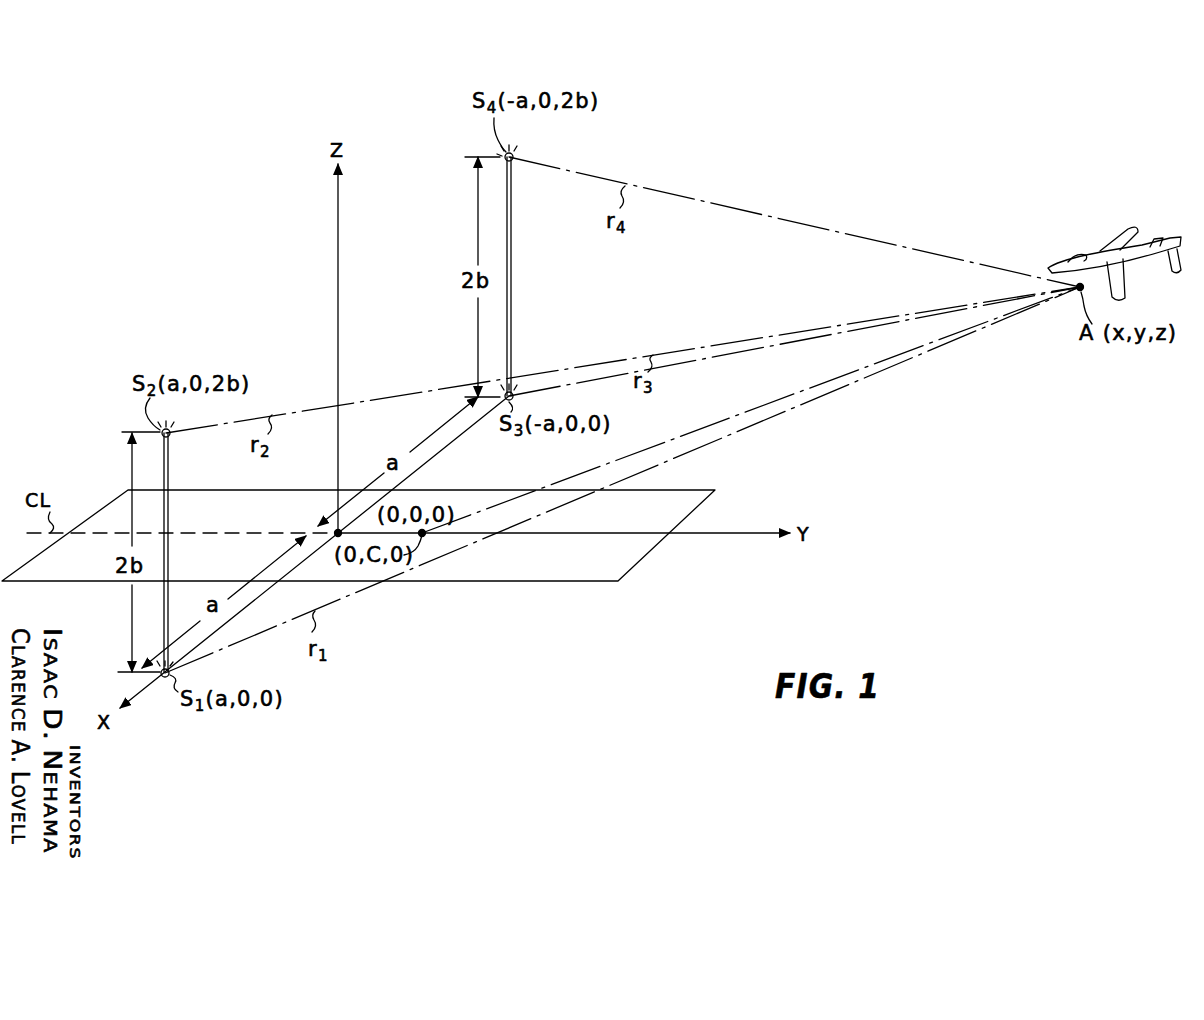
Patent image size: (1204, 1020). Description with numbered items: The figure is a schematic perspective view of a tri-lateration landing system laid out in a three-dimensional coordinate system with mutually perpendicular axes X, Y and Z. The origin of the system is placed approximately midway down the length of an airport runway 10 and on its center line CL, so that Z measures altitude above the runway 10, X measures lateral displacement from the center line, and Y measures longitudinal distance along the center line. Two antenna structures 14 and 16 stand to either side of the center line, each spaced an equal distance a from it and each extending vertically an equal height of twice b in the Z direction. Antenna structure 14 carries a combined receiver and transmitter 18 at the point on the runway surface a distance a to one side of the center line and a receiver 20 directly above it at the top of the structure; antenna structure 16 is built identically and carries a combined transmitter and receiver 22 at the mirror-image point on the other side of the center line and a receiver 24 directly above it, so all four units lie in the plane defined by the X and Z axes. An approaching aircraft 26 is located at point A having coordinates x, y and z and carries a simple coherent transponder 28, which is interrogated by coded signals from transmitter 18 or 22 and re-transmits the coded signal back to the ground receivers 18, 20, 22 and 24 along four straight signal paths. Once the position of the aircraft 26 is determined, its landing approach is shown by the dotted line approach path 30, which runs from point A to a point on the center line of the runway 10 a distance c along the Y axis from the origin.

The airport runway 10 is at (92, 500).
The antenna structure 14 is at (176, 574).
The antenna structure 16 is at (516, 240).
The combined receiver and transmitter 18 is at (160, 673).
The receiver 20 is at (171, 432).
The combined transmitter and receiver 22 is at (510, 389).
The receiver 24 is at (513, 157).
The aircraft 26 is at (1093, 238).
The coherent transponder 28 is at (1073, 300).
The approach path 30 is at (690, 434).